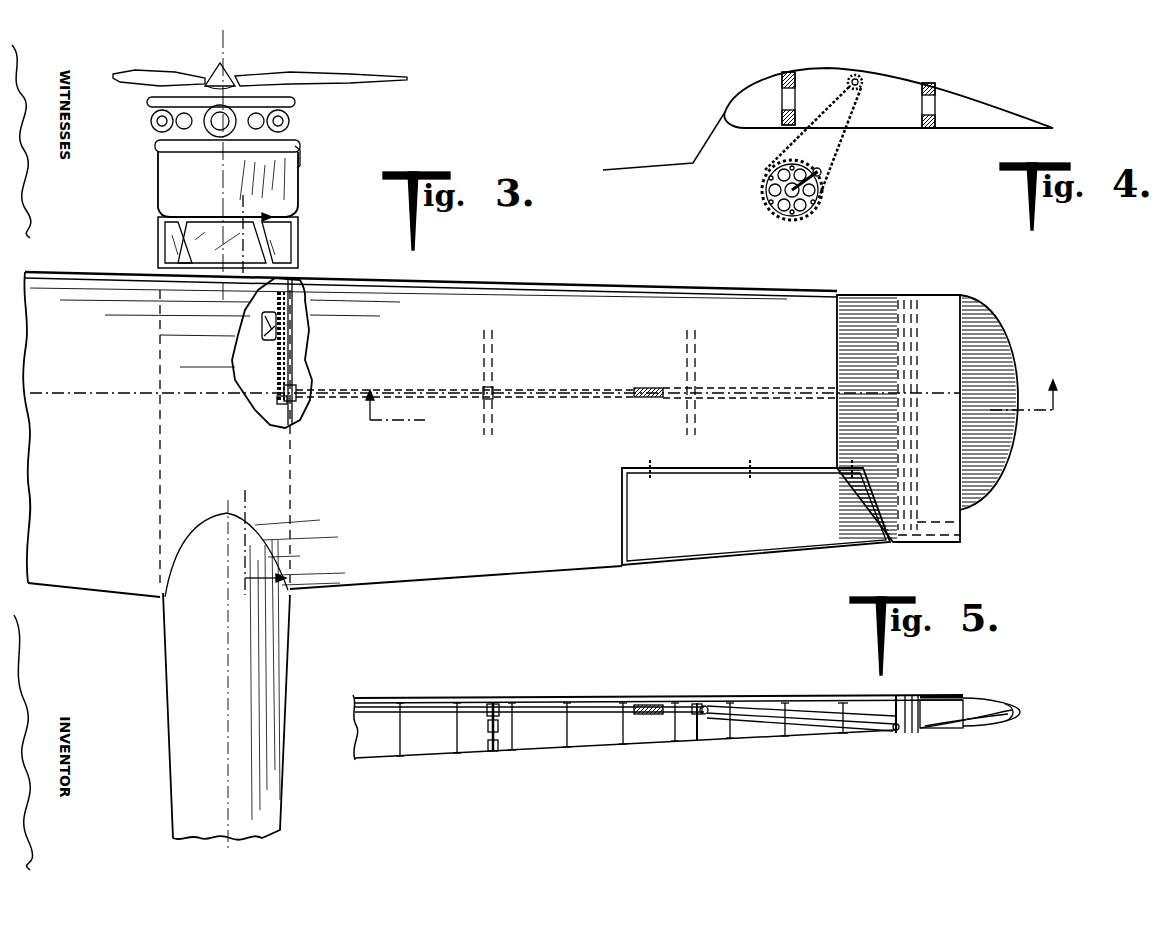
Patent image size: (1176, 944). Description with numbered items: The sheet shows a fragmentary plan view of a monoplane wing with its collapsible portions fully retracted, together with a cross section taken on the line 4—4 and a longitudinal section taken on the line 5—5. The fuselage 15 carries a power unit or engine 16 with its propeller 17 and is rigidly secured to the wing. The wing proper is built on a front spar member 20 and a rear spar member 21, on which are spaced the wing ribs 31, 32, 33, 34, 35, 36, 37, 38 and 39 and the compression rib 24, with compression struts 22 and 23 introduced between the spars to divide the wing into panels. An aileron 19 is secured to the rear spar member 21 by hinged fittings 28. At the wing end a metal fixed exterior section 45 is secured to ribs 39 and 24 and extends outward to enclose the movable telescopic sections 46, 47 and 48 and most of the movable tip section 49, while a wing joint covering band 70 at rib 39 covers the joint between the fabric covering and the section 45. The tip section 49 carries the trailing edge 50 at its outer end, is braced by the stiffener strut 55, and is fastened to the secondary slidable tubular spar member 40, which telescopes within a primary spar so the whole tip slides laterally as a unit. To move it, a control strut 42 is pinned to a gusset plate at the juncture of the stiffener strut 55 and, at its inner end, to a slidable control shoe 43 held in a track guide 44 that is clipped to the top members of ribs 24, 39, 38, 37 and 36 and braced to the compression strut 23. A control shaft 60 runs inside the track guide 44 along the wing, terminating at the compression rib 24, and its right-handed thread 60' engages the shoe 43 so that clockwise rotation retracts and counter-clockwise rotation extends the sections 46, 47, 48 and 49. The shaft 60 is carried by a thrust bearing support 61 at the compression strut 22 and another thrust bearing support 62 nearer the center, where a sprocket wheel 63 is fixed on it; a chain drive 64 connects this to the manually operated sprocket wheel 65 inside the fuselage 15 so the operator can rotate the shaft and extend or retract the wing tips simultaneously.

In FIG. 3, the fuselage 15 is at (238, 683).
In FIG. 3, the power unit or engine 16 is at (262, 118).
In FIG. 3, the propeller 17 is at (278, 80).
In FIG. 3, the aileron 19 is at (726, 545).
In FIG. 4, the front spar member 20 is at (788, 100).
In FIG. 4, the rear spar member 21 is at (928, 104).
In FIG. 3, the compression strut 22 is at (487, 428).
In FIG. 5, the compression strut 22 is at (490, 740).
In FIG. 3, the compression strut 23 is at (690, 415).
In FIG. 5, the compression strut 23 is at (697, 722).
In FIG. 5, the compression rib 24 is at (897, 730).
In FIG. 3, the hinged fittings 28 is at (852, 475).
In FIG. 5, the wing rib 31 is at (398, 735).
In FIG. 5, the wing rib 32 is at (455, 735).
In FIG. 5, the wing rib 33 is at (510, 735).
In FIG. 5, the wing rib 34 is at (565, 730).
In FIG. 5, the wing rib 35 is at (620, 725).
In FIG. 5, the wing rib 36 is at (672, 730).
In FIG. 5, the wing rib 37 is at (732, 735).
In FIG. 5, the wing rib 38 is at (786, 733).
In FIG. 5, the wing rib 39 is at (845, 731).
In FIG. 5, the secondary slidable tubular spar member 40 is at (990, 715).
In FIG. 5, the control strut 42 is at (860, 722).
In FIG. 5, the slidable control shoe 43 is at (706, 705).
In FIG. 3, the track guide 44 is at (745, 386).
In FIG. 5, the track guide 44 is at (797, 708).
In FIG. 3, the fixed exterior section 45 is at (880, 310).
In FIG. 5, the fixed exterior section 45 is at (936, 698).
In FIG. 3, the movable telescopic section 46 is at (905, 310).
In FIG. 5, the movable telescopic section 46 is at (958, 700).
In FIG. 3, the movable telescopic section 47 is at (911, 340).
In FIG. 5, the movable telescopic section 47 is at (964, 700).
In FIG. 3, the movable telescopic section 48 is at (912, 388).
In FIG. 5, the movable telescopic section 48 is at (968, 704).
In FIG. 3, the movable tip section 49 is at (995, 368).
In FIG. 5, the movable tip section 49 is at (985, 706).
In FIG. 5, the trailing edge 50 is at (1020, 714).
In FIG. 5, the stiffener strut 55 is at (975, 718).
In FIG. 3, the control shaft 60 is at (464, 379).
In FIG. 4, the control shaft 60 is at (857, 118).
In FIG. 5, the control shaft 60 is at (529, 687).
In FIG. 3, the right-handed thread 60' is at (649, 371).
In FIG. 5, the right-handed thread 60' is at (656, 682).
In FIG. 3, the thrust bearing support 61 is at (491, 389).
In FIG. 5, the thrust bearing support 61 is at (497, 704).
In FIG. 3, the thrust bearing support 62 is at (297, 392).
In FIG. 3, the sprocket wheel 63 is at (284, 404).
In FIG. 4, the sprocket wheel 63 is at (852, 77).
In FIG. 3, the chain drive 64 is at (283, 366).
In FIG. 4, the chain drive 64 is at (846, 130).
In FIG. 3, the manually operated sprocket wheel 65 is at (270, 326).
In FIG. 4, the manually operated sprocket wheel 65 is at (818, 198).
In FIG. 3, the wing joint covering band 70 is at (838, 290).
In FIG. 3, the section line 4- 4 is at (250, 403).
In FIG. 3, the section line 5- 5 is at (710, 406).